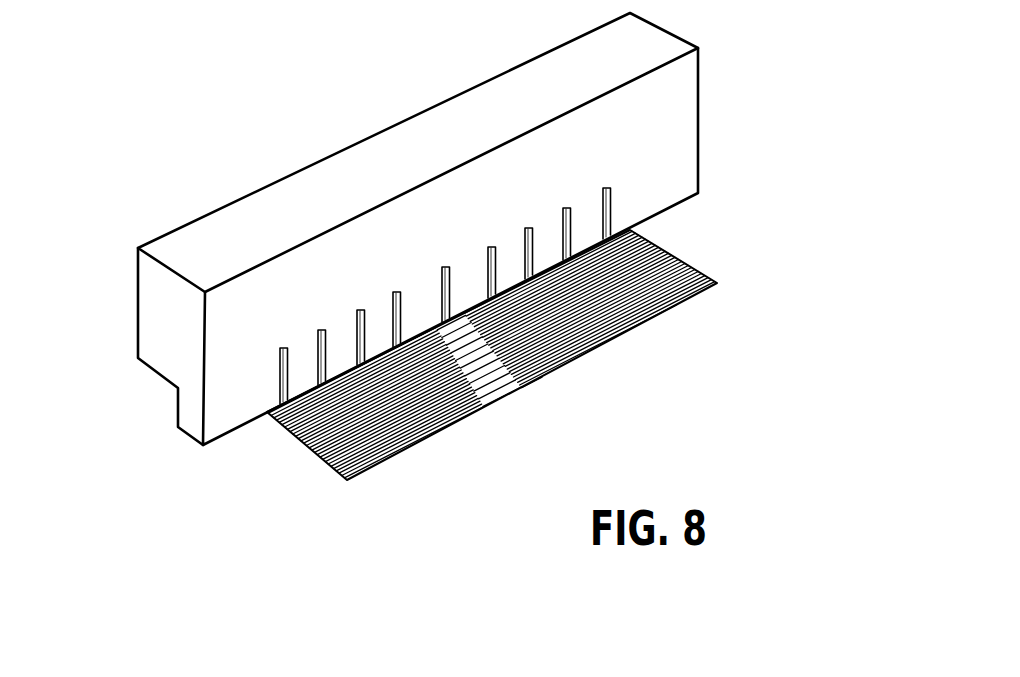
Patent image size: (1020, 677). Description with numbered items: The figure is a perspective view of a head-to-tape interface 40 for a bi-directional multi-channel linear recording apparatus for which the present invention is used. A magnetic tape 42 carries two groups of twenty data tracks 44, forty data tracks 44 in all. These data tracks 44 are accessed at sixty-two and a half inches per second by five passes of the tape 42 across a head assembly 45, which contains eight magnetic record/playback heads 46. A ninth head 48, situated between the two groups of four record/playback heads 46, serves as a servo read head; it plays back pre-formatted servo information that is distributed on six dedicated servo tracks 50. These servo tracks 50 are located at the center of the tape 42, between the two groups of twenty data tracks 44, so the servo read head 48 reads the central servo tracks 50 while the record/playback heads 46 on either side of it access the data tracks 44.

The head-to-tape interface 40 is at (752, 130).
The magnetic tape 42 is at (298, 442).
The data tracks 44 is at (417, 438).
The head assembly 45 is at (152, 302).
The magnetic record/playback heads 46 is at (393, 292).
The servo read head 48 is at (442, 267).
The servo tracks 50 is at (527, 383).